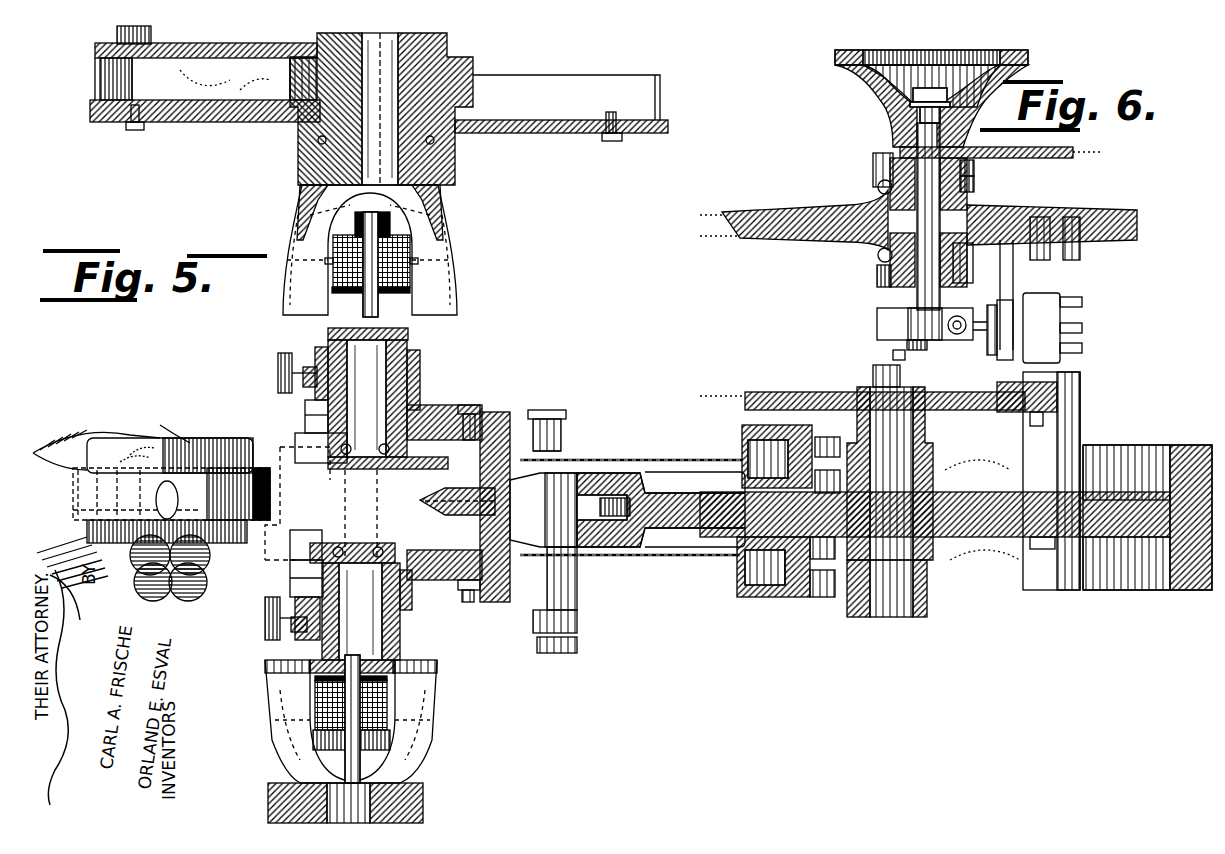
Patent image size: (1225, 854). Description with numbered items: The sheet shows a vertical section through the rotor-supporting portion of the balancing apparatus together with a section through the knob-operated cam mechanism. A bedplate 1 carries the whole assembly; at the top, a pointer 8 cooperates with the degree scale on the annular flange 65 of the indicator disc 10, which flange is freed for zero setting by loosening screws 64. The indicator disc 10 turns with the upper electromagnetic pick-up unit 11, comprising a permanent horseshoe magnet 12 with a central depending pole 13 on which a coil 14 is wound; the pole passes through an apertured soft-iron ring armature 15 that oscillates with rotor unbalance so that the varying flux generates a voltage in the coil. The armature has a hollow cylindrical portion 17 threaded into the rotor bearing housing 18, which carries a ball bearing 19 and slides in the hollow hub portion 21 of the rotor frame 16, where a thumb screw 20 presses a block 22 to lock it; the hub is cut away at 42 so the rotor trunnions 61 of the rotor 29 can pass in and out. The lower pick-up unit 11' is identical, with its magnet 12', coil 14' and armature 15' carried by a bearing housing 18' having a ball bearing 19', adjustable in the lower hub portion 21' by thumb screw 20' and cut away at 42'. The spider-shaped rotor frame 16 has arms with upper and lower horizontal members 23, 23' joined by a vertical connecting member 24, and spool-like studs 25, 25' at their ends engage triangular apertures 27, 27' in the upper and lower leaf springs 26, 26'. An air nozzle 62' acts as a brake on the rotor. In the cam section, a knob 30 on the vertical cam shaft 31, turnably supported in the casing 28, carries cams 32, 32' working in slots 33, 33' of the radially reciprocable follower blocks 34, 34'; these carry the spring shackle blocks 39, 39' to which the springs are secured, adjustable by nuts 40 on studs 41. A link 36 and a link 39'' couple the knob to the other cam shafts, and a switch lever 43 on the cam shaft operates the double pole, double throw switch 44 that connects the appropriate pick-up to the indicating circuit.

In FIG. 5, the bedplate 1 is at (1112, 462).
In FIG. 6, the bedplate 1 is at (1110, 218).
In FIG. 5, the pointer 8 is at (106, 38).
In FIG. 5, the indicator disc 10 is at (92, 122).
In FIG. 5, the electromagnetic pick-up unit 11 is at (393, 250).
In FIG. 5, the lower electromagnetic pick-up unit 11' is at (370, 721).
In FIG. 5, the permanent horseshoe magnet 12 is at (445, 255).
In FIG. 5, the permanent horseshoe magnet of lower pick-up 12' is at (442, 725).
In FIG. 5, the central cylindrical depending pole 13 is at (381, 267).
In FIG. 5, the coil 14 is at (371, 279).
In FIG. 5, the coil of lower pick-up 14' is at (308, 713).
In FIG. 5, the armature 15 is at (391, 331).
In FIG. 5, the lower armature 15' is at (375, 676).
In FIG. 5, the rotor frame 16 is at (444, 407).
In FIG. 5, the hollow cylindrical portion 17 is at (420, 360).
In FIG. 5, the rotor bearing housing 18 is at (295, 415).
In FIG. 5, the lower rotor bearing housing 18' is at (289, 578).
In FIG. 5, the ball bearing 19 is at (317, 468).
In FIG. 5, the lower ball bearing 19' is at (281, 548).
In FIG. 5, the thumb screw 20 is at (277, 366).
In FIG. 5, the lower thumb screw 20' is at (257, 632).
In FIG. 5, the hollow hub portion 21 is at (367, 390).
In FIG. 5, the lower hollow hub portion 21' is at (389, 608).
In FIG. 5, the block 22 is at (312, 356).
In FIG. 5, the upper horizontal member 23 is at (493, 408).
In FIG. 5, the lower horizontal member 23' is at (491, 598).
In FIG. 5, the vertical connecting member 24 is at (484, 474).
In FIG. 5, the spool-like stud 25 is at (569, 415).
In FIG. 5, the lower spool-like stud 25' is at (585, 600).
In FIG. 5, the upper supporting leaf spring 26 is at (661, 458).
In FIG. 5, the lower supporting leaf spring 26' is at (661, 561).
In FIG. 5, the triangular aperture 27 is at (631, 441).
In FIG. 5, the lower triangular aperture 27' is at (630, 570).
In FIG. 6, the casing 28 is at (982, 178).
In FIG. 5, the rotor 29 is at (184, 418).
In FIG. 6, the knob 30 is at (870, 65).
In FIG. 6, the vertical cam shaft 31 is at (906, 344).
In FIG. 6, the cam 32 is at (893, 184).
In FIG. 6, the lower cam 32' is at (893, 260).
In FIG. 6, the slot 33 is at (992, 192).
In FIG. 6, the lower slot 33' is at (860, 289).
In FIG. 5, the radially reciprocable follower block 34 is at (918, 462).
In FIG. 6, the radially reciprocable follower block 34 is at (913, 207).
In FIG. 5, the lower follower block 34' is at (918, 588).
In FIG. 5, the link 36 is at (760, 394).
In FIG. 6, the link 36 is at (1062, 158).
In FIG. 5, the spring shackle block 39 is at (753, 455).
In FIG. 5, the lower spring shackle block 39' is at (758, 579).
In FIG. 6, the link 39'' is at (928, 361).
In FIG. 5, the nut 40 is at (825, 435).
In FIG. 5, the stud 41 is at (822, 600).
In FIG. 5, the cut away portion 42 is at (276, 383).
In FIG. 5, the lower cut away portion 42' is at (264, 613).
In FIG. 6, the switch lever 43 is at (980, 342).
In FIG. 6, the double pole, double throw switch 44 is at (1050, 296).
In FIG. 5, the rotor trunnion 61 is at (185, 568).
In FIG. 5, the air nozzle 62' is at (439, 499).
In FIG. 5, the screw 64 is at (612, 141).
In FIG. 5, the annular flange 65 is at (100, 77).